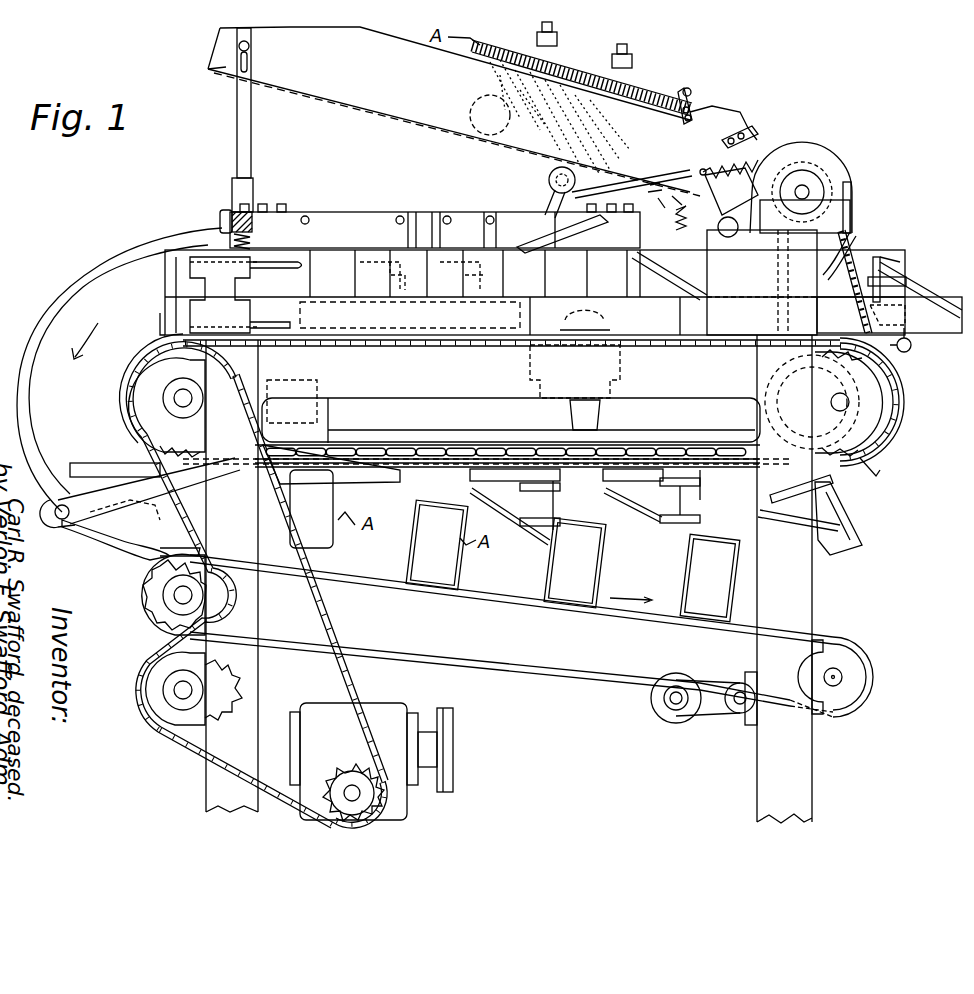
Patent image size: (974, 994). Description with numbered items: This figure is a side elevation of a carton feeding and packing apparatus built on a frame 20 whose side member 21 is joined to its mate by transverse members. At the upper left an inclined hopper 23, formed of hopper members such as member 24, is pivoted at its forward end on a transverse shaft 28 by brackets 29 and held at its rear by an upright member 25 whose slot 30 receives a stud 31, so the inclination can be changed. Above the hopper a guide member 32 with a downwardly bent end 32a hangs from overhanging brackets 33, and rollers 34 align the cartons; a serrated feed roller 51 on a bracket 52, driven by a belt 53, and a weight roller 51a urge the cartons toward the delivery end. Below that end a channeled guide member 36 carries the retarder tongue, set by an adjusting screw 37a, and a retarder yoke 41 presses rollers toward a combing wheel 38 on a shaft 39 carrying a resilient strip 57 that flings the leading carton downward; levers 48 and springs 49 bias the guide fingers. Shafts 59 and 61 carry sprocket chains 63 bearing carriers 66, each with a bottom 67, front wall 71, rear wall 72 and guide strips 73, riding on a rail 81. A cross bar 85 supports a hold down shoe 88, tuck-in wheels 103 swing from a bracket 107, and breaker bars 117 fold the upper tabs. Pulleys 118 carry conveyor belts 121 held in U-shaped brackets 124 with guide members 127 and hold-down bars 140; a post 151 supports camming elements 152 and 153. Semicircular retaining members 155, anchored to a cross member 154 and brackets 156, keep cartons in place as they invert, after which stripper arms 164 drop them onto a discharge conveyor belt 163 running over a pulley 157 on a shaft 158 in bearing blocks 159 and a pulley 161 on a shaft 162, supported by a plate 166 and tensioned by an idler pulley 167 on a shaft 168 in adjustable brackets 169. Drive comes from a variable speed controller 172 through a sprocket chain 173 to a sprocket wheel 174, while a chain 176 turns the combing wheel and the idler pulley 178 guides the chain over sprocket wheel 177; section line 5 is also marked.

The section line 5 is at (9, 272).
The frame 20 is at (835, 573).
The side member 21 is at (800, 607).
The hopper 23 is at (386, 127).
The hopper member 24 is at (465, 118).
The upright member 25 is at (252, 148).
The transverse shaft 28 is at (728, 238).
The bracket 29 is at (718, 188).
The slot 30 is at (237, 62).
The stud 31 is at (243, 44).
The guide member 32 is at (650, 90).
The downwardly bent end 32a is at (700, 98).
The overhanging bracket 33 is at (613, 56).
The roller 34 is at (688, 86).
The channeled guide member 36 is at (676, 194).
The adjusting screw 37a is at (655, 183).
The combing wheel 38 is at (835, 158).
The shaft 39 is at (810, 190).
The retarder yoke 41 is at (688, 232).
The lever 48 is at (762, 128).
The spring 49 is at (712, 160).
The serrated feed roller 51 is at (548, 172).
The weight roller 51a is at (470, 103).
The bracket 52 is at (548, 190).
The belt 53 is at (605, 188).
The strip of resilient friction material 57 is at (852, 240).
The shaft 59 is at (842, 412).
The shaft 61 is at (165, 397).
The sprocket chain 63 is at (418, 466).
The carrier 66 is at (888, 262).
The bottom 67 is at (706, 476).
The front wall 71 is at (884, 474).
The rear wall 72 is at (850, 538).
The guide strip 73 is at (940, 288).
The rail 81 is at (476, 440).
The cross bar 85 is at (642, 252).
The hold down shoe 88 is at (650, 268).
The tuck-in wheel 103 is at (600, 314).
The bracket 107 is at (595, 413).
The upper tab breaker bar 117 is at (540, 236).
The conveyor belt pulley 118 is at (896, 430).
The conveyor belt 121 is at (290, 334).
The U-shaped bracket 124 is at (538, 312).
The guide member 127 is at (647, 310).
The hold-down bar 140 is at (382, 248).
The post 151 is at (215, 292).
The upper camming element 152 is at (272, 268).
The lower camming element 153 is at (275, 310).
The cross member 154 is at (224, 210).
The retaining member 155 is at (130, 240).
The bracket 156 is at (90, 530).
The pulley 157 is at (160, 565).
The shaft 158 is at (172, 595).
The bearing block 159 is at (170, 608).
The pulley 161 is at (848, 716).
The shaft 162 is at (842, 682).
The discharge conveyor belt 163 is at (440, 657).
The stripper arm 164 is at (352, 484).
The supporting plate 166 is at (606, 615).
The idler pulley 167 is at (658, 712).
The shaft 168 is at (676, 706).
The adjustable bracket 169 is at (722, 718).
The variable speed controller 172 is at (390, 702).
The sprocket chain 173 is at (345, 672).
The sprocket wheel 174 is at (152, 415).
The sprocket chain 176 is at (845, 262).
The sprocket wheel 177 is at (172, 622).
The idler pulley 178 is at (165, 716).